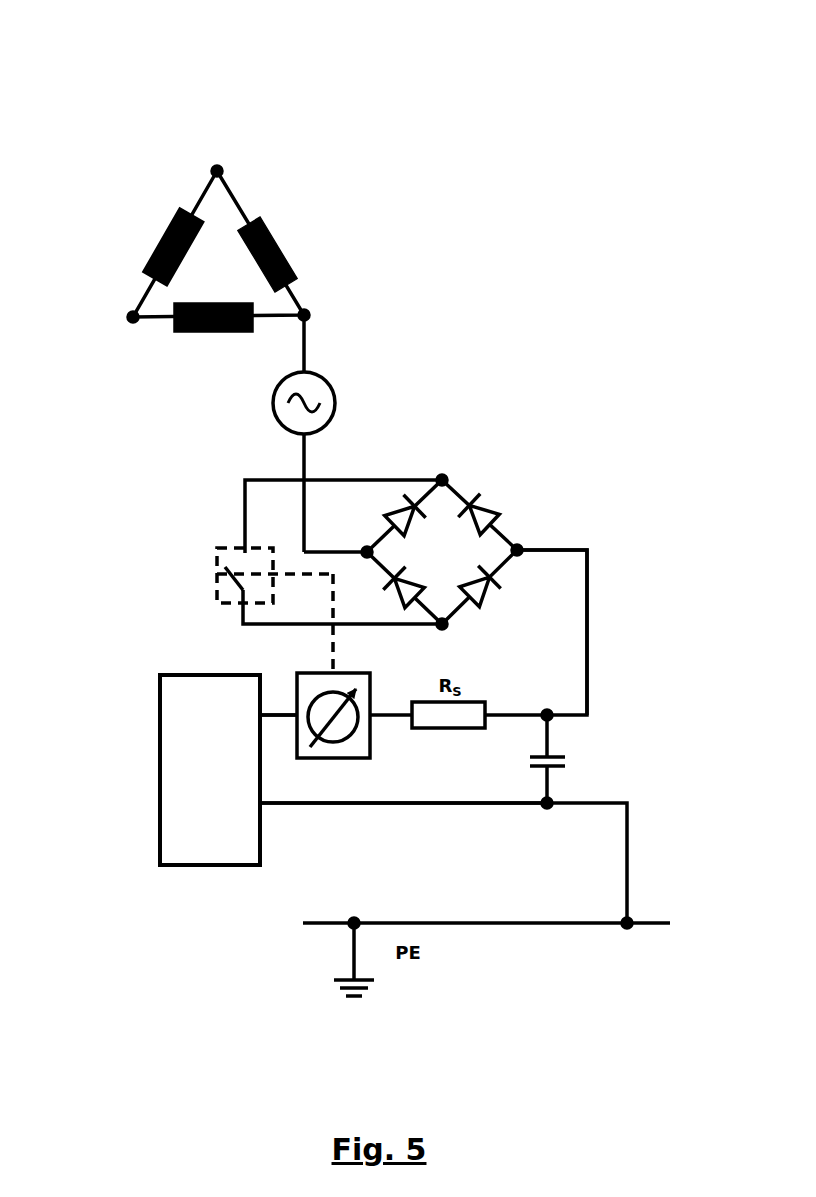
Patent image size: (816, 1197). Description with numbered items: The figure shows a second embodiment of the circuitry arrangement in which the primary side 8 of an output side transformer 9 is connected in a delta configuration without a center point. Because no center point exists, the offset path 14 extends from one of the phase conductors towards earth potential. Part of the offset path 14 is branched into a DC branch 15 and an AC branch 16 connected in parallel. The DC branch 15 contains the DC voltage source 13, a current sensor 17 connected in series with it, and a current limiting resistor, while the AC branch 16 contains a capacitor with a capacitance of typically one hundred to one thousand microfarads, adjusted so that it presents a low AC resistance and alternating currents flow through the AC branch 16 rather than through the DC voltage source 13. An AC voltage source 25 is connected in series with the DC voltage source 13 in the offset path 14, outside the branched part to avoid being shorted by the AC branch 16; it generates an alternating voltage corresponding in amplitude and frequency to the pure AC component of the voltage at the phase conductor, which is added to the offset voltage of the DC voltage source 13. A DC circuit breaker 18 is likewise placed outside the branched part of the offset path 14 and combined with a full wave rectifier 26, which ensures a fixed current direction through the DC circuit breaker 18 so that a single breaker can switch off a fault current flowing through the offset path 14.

The transformer 9 is at (221, 170).
The primary side 8 is at (287, 238).
The AC voltage source 25 is at (334, 390).
The full wave rectifier 26 is at (469, 486).
The offset path 14 is at (591, 610).
The DC circuit breaker 18 is at (213, 593).
The current sensor 17 is at (297, 675).
The DC voltage source 13 is at (157, 743).
The DC branch 15 is at (392, 722).
The AC branch 16 is at (553, 783).